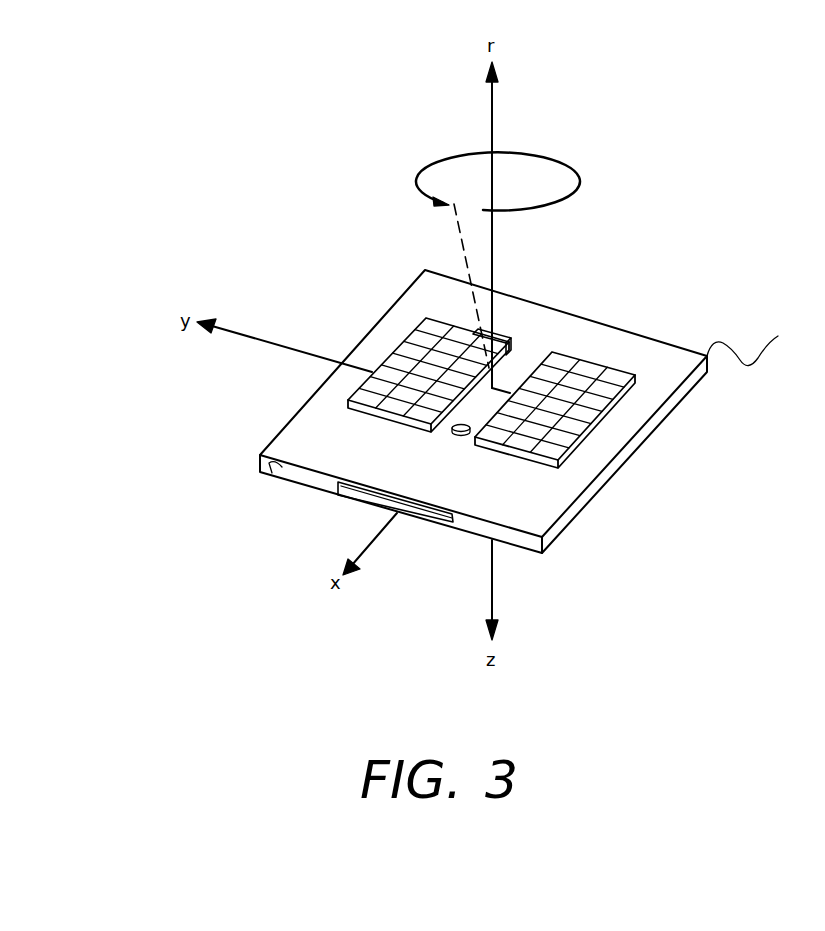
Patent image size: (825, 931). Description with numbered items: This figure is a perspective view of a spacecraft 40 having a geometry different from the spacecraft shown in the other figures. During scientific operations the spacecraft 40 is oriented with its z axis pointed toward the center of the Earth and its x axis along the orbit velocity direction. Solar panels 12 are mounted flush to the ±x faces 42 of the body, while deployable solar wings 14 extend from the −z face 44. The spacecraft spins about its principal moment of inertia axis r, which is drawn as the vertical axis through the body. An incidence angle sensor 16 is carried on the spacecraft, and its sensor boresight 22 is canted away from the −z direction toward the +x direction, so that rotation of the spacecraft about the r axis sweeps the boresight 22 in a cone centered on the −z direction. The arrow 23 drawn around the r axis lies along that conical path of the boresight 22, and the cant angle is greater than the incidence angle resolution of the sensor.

The solar panels 12 is at (345, 495).
The deployable solar wings 14 is at (393, 352).
The incidence angle sensor 16 is at (498, 387).
The sensor boresight 22 is at (455, 218).
The arrow 23 is at (553, 158).
The spacecraft 40 is at (595, 497).
The ±x faces 42 is at (272, 473).
The −z face 44 is at (515, 318).